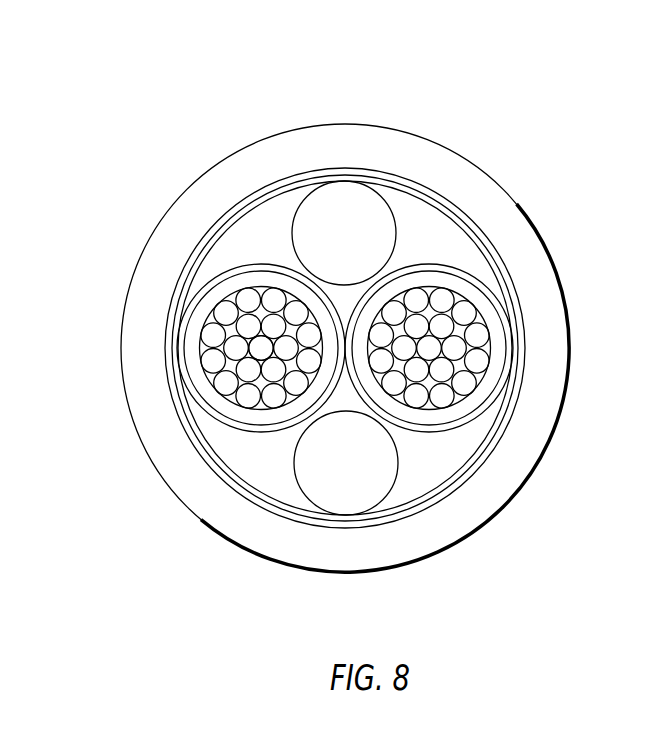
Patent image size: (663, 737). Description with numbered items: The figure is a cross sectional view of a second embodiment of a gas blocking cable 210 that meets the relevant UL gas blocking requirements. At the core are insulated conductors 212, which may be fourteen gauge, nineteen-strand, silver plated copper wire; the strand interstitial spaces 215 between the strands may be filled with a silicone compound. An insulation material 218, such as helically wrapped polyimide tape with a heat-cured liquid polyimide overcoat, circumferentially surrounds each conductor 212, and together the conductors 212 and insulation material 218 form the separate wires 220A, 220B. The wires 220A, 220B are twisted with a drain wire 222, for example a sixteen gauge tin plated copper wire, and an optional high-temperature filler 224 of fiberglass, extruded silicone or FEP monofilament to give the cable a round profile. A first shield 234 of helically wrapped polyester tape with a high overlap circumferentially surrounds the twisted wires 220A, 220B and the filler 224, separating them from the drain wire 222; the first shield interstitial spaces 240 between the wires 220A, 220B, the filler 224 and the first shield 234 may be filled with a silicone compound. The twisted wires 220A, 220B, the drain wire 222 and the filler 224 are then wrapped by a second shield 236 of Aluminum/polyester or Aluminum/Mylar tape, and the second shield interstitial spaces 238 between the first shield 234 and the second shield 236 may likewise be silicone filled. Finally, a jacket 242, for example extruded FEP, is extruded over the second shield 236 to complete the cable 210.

The gas blocking cable 210 is at (138, 83).
The insulated conductor 212 is at (261, 348).
The strand interstitial spaces 215 is at (231, 364).
The insulation material 218 is at (218, 406).
The wire 220A is at (186, 346).
The wire 220B is at (462, 421).
The drain wire 222 is at (343, 232).
The filler 224 is at (330, 442).
The first shield 234 is at (300, 513).
The second shield 236 is at (528, 347).
The second shield interstitial spaces 238 is at (442, 237).
The first shield interstitial spaces 240 is at (275, 491).
The jacket 242 is at (513, 469).